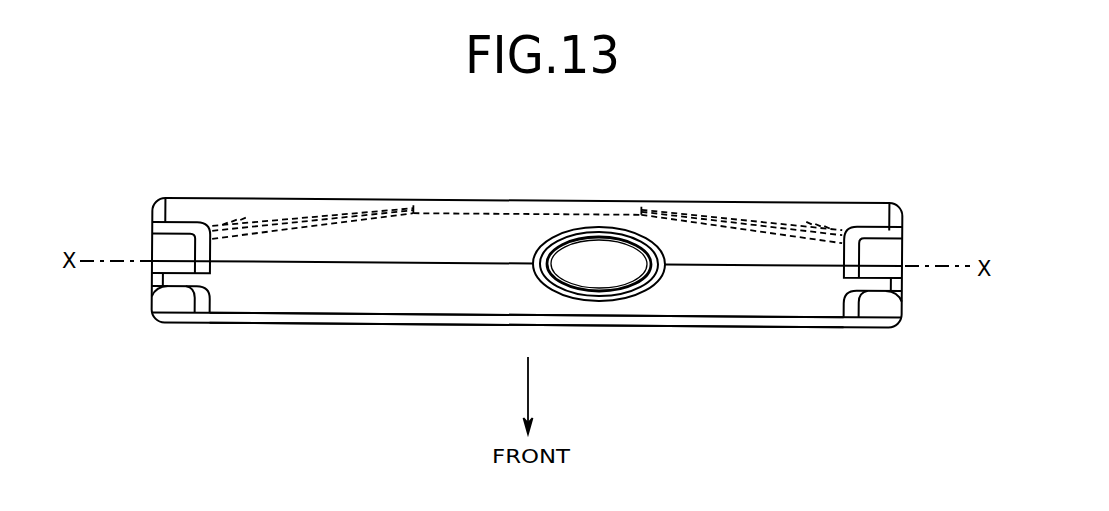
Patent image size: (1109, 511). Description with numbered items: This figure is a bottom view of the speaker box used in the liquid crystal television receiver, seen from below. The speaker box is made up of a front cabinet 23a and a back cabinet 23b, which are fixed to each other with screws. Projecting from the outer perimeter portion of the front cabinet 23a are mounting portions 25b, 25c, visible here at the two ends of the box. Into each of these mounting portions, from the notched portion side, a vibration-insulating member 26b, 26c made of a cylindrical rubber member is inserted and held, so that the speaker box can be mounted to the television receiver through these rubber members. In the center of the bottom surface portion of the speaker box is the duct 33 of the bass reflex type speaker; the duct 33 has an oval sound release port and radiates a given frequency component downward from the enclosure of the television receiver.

The front cabinet 23a is at (357, 303).
The back cabinet 23b is at (358, 228).
The mounting portion 25b is at (152, 278).
The mounting portion 25c is at (898, 285).
The vibration-insulating member 26b is at (165, 290).
The vibration-insulating member 26c is at (878, 297).
The duct 33 is at (613, 282).